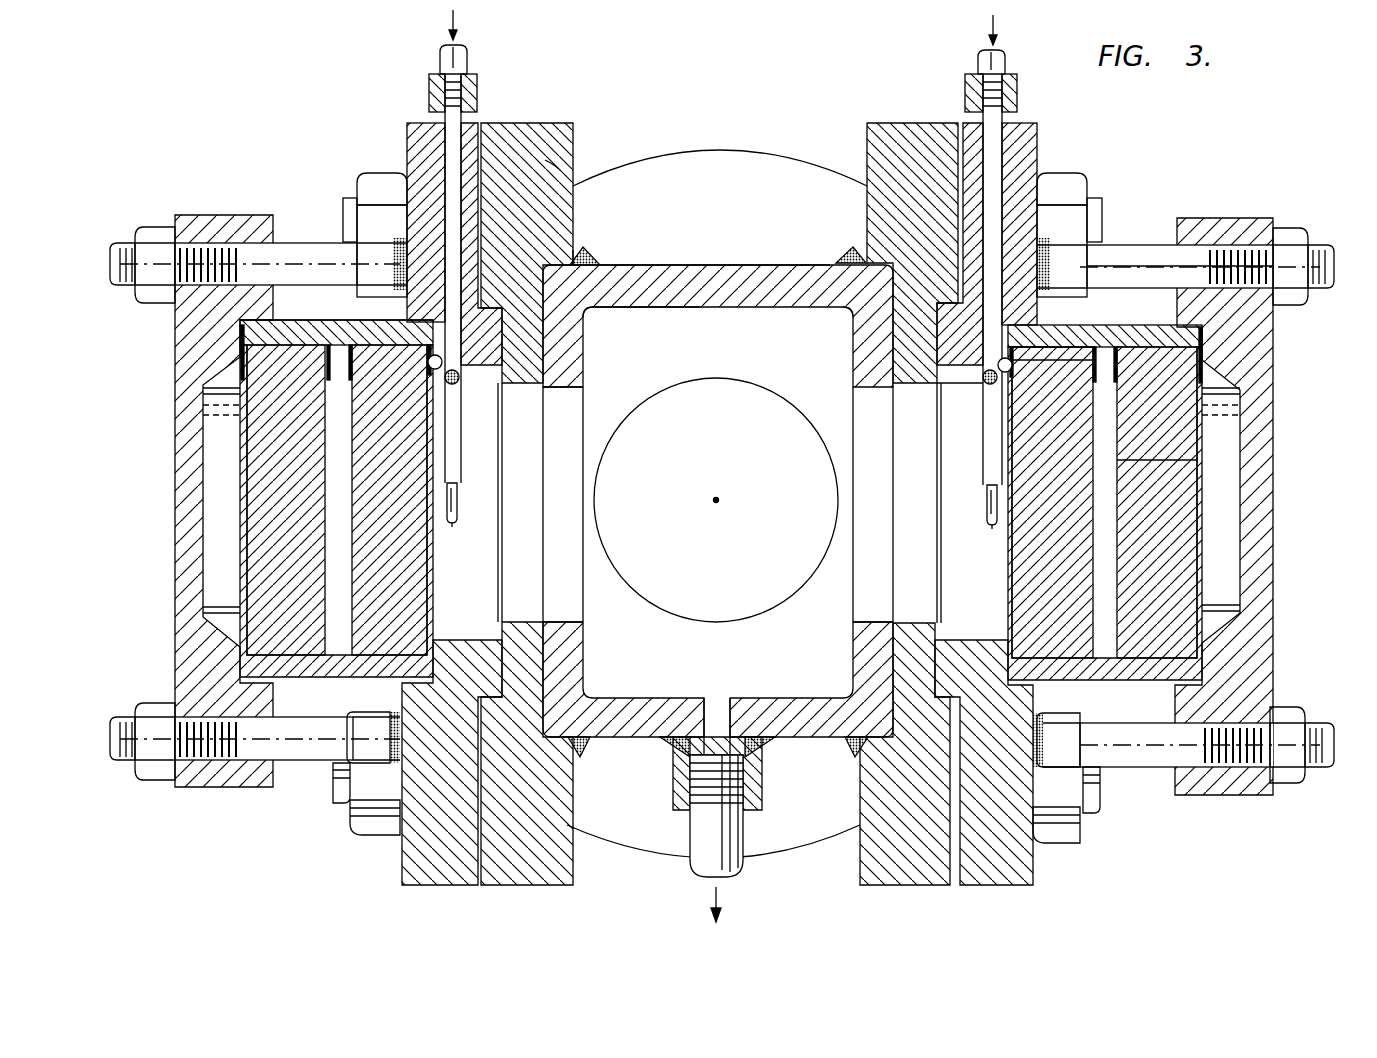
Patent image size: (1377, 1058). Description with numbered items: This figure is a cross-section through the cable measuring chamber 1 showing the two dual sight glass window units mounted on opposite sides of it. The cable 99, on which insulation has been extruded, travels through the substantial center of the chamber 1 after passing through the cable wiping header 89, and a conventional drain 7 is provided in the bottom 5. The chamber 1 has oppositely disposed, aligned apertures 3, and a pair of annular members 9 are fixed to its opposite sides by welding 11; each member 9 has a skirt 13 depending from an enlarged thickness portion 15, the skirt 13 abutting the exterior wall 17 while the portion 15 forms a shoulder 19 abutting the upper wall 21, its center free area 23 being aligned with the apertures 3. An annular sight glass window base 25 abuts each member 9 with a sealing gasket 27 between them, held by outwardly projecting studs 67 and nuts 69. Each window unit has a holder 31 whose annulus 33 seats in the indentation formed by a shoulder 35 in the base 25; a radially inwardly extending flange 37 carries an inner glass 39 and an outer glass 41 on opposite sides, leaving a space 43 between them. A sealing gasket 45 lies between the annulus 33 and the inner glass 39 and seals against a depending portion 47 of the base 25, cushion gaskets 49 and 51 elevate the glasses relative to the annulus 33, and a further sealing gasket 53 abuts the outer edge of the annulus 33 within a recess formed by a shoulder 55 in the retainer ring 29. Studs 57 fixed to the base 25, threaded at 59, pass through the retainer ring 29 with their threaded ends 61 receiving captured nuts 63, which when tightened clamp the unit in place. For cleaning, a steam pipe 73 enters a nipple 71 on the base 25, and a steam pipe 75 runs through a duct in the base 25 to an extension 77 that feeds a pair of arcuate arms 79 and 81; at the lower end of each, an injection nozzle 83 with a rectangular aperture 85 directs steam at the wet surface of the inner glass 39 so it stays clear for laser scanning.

The chamber 1 is at (690, 245).
The apertures 3 is at (570, 585).
The bottom 5 is at (815, 725).
The drain 7 is at (740, 832).
The annular members 9 is at (540, 123).
The welding 11 is at (583, 260).
The skirt 13 is at (545, 370).
The enlarged thickness portion 15 is at (548, 158).
The exterior wall 17 is at (578, 321).
The shoulder 19 is at (574, 258).
The upper wall 21 is at (733, 265).
The center free area 23 is at (540, 412).
The sight glass window bases 25 is at (407, 137).
The sealing gasket 27 is at (565, 342).
The retainer rings 29 is at (180, 320).
The holder 31 is at (318, 300).
The ring or annular member 33 is at (287, 332).
The shoulder 35 is at (1022, 345).
The radially inwardly extending flange 37 is at (340, 365).
The inner glass 39 is at (405, 583).
The outer glass 41 is at (270, 635).
The space 43 is at (1100, 472).
The sealing gasket 45 is at (440, 372).
The depending portion 47 is at (1012, 365).
The cushion gasket 49 is at (265, 415).
The cushion gasket 51 is at (433, 430).
The sealing gasket 53 is at (280, 360).
The shoulder 55 is at (1200, 285).
The studs 57 is at (290, 245).
The threaded portion 59 is at (1225, 245).
The threaded ends 61 is at (125, 243).
The captured nut 63 is at (158, 228).
The studs 67 is at (1098, 198).
The nuts 69 is at (1072, 190).
The nipple 71 is at (477, 100).
The steam pipe 73 is at (465, 60).
The steam pipe 75 is at (1000, 215).
The extension 77 is at (955, 390).
The arm 79 is at (462, 458).
The arm 81 is at (460, 380).
The injection nozzle 83 is at (456, 514).
The rectangular aperture 85 is at (457, 502).
The cable wiping header 89 is at (718, 150).
The cable 99 is at (716, 498).